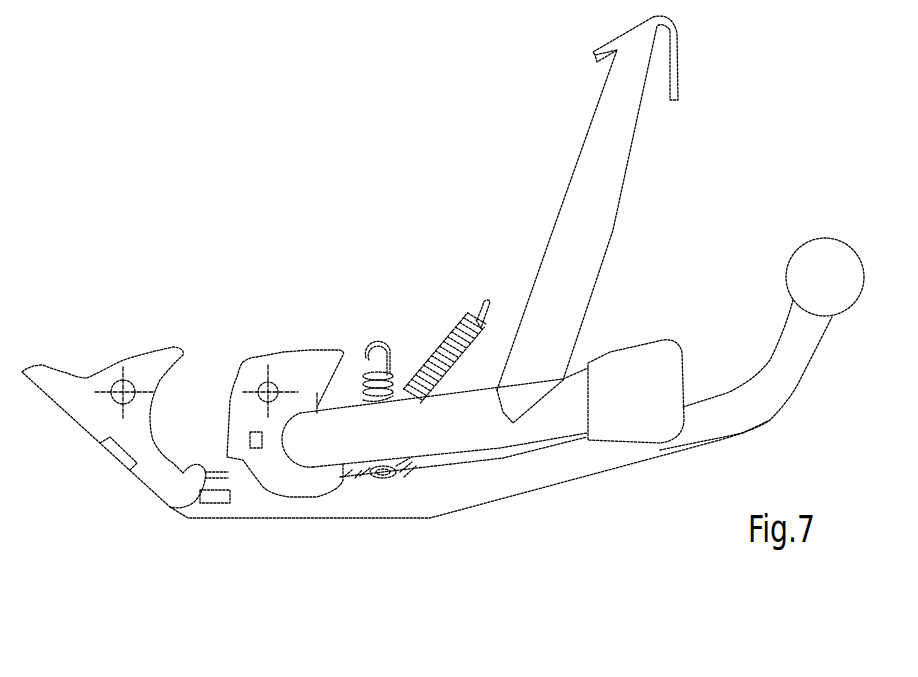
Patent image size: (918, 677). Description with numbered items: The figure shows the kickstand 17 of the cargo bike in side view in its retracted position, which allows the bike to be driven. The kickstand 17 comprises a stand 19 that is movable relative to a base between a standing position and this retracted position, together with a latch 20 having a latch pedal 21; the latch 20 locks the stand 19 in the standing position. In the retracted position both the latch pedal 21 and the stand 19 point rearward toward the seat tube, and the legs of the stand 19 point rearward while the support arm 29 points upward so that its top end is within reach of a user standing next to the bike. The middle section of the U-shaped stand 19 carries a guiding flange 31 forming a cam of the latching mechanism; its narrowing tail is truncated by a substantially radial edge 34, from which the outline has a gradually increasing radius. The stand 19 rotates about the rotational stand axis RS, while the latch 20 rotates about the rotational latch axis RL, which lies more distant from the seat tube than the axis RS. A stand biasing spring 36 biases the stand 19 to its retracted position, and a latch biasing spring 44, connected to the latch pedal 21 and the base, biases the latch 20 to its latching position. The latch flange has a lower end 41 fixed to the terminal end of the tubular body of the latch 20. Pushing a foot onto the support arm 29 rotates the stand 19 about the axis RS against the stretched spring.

The kickstand 17 is at (376, 182).
The support arm 29 is at (633, 148).
The rotational latch axis RL is at (123, 390).
The rotational stand axis RS is at (268, 390).
The latch biasing spring 44 is at (373, 332).
The stand biasing spring 36 is at (457, 332).
The lower end of latch flange 41 is at (177, 498).
The guiding flange 31 is at (297, 490).
The radial edge 34 is at (333, 488).
The latch 20 is at (427, 503).
The stand 19 is at (480, 430).
The latch pedal 21 is at (578, 463).